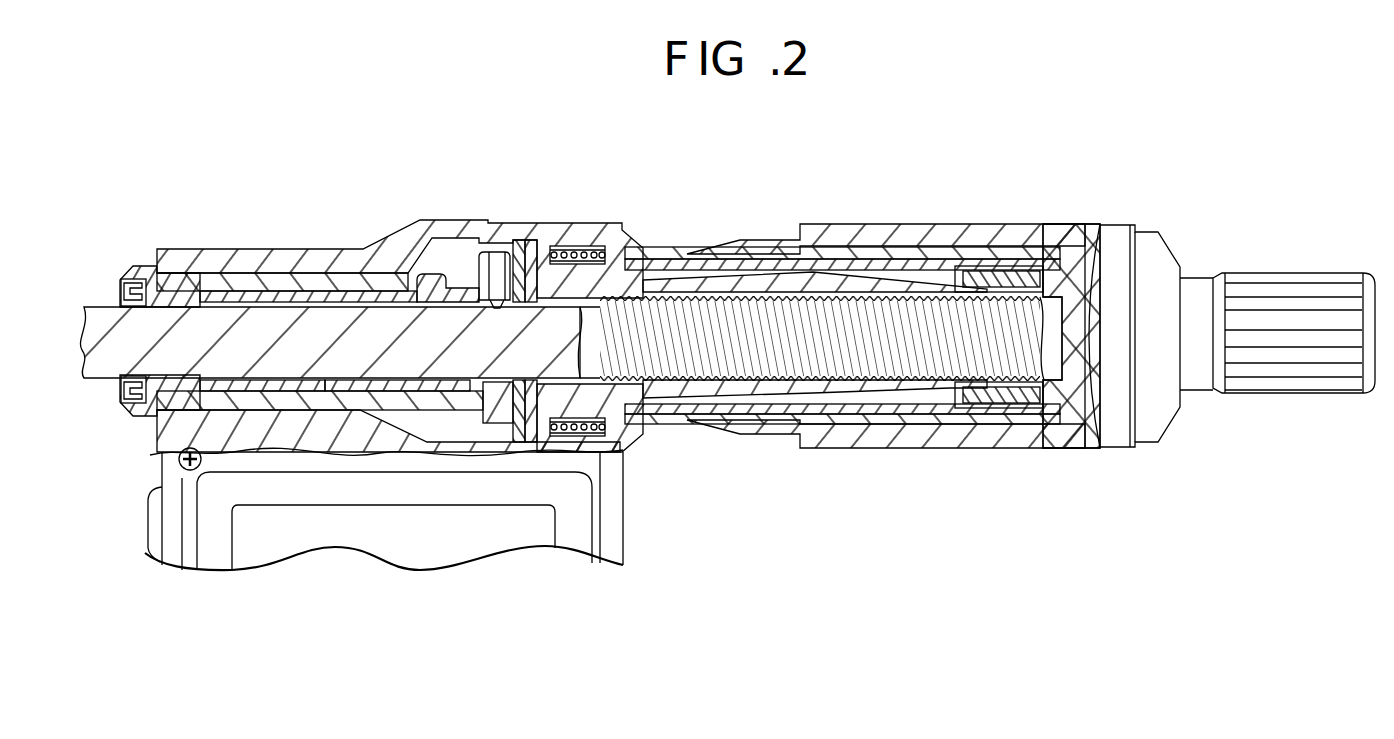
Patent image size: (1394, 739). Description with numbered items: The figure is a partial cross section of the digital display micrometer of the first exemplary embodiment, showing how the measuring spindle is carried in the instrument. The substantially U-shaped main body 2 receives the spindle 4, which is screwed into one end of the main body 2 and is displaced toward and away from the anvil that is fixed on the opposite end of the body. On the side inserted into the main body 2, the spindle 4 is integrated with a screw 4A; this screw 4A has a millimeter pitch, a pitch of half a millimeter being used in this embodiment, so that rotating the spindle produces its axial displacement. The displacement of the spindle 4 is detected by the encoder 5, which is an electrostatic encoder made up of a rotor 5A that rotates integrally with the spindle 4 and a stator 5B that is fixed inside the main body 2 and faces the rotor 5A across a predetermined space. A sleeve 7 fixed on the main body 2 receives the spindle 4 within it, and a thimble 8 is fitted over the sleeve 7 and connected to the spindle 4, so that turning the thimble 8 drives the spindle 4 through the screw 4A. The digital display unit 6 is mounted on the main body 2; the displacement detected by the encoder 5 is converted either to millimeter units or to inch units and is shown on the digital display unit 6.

The main body 2 is at (276, 251).
The spindle 4 is at (98, 308).
The screw 4A is at (746, 418).
The encoder 5 is at (523, 277).
The rotor 5A is at (518, 240).
The stator 5B is at (532, 240).
The digital display unit 6 is at (415, 560).
The sleeve 7 is at (655, 258).
The thimble 8 is at (936, 225).